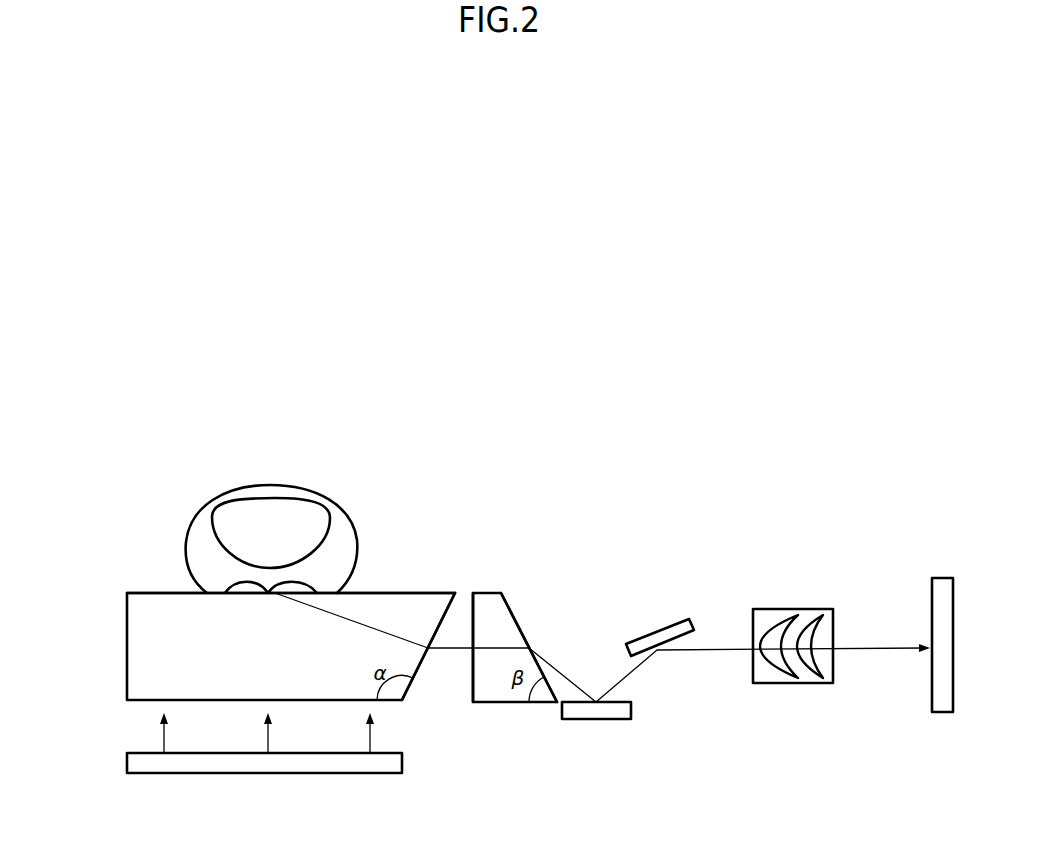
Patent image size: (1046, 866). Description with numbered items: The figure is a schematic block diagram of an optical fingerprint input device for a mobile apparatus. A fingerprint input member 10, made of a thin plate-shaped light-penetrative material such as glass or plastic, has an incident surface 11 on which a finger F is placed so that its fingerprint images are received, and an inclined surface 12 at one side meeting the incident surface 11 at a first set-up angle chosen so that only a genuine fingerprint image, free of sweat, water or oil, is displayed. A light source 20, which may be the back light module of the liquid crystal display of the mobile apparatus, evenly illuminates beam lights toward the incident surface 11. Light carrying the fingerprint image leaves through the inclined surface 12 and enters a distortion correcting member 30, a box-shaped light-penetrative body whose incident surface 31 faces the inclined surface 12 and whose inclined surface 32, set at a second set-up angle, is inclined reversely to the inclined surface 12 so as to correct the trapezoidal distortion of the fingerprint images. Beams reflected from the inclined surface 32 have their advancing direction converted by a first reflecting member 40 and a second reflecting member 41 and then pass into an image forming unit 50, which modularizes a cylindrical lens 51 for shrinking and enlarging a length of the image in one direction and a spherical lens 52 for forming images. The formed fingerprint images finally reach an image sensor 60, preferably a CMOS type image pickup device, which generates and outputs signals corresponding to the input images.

The finger F is at (317, 492).
The fingerprint input member 10 is at (121, 651).
The incident surface 11 is at (382, 593).
The inclined surface 12 is at (447, 615).
The light source 20 is at (335, 763).
The distortion correcting member 30 is at (514, 710).
The incident surface 31 is at (478, 681).
The inclined surface 32 is at (515, 617).
The first reflecting member 40 is at (602, 714).
The second reflecting member 41 is at (673, 630).
The image forming unit 50 is at (790, 654).
The cylindrical lens 51 is at (775, 668).
The spherical lens 52 is at (813, 663).
The image sensor 60 is at (937, 587).